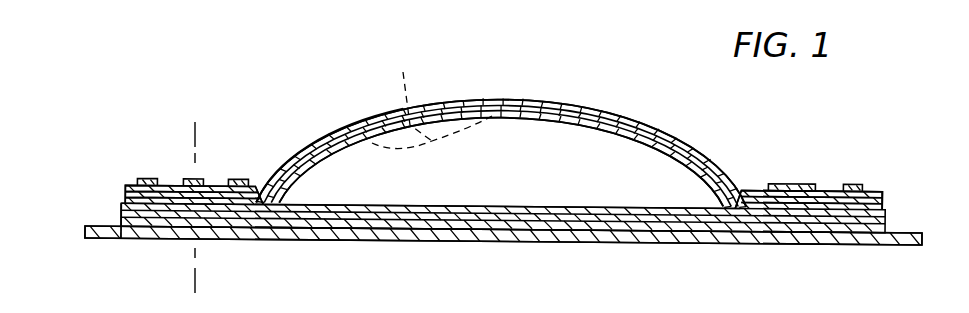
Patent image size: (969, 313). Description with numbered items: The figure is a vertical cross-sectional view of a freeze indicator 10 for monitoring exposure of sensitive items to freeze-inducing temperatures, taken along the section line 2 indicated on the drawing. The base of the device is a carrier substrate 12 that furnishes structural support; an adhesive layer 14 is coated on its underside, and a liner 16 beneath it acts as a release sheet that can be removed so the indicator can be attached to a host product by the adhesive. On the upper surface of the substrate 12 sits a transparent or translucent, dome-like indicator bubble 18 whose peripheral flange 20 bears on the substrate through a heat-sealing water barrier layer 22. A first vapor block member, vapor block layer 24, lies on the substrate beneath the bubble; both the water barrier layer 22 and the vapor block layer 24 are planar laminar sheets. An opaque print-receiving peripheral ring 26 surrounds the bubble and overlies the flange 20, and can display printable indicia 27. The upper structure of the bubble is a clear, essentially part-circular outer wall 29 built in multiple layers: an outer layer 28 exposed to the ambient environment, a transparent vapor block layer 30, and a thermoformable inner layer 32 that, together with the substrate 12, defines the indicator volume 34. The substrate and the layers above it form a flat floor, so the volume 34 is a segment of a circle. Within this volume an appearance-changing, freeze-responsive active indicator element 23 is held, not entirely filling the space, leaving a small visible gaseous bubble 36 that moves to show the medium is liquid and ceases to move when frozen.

The freeze indicator 10 is at (289, 41).
The carrier substrate 12 is at (120, 216).
The adhesive layer 14 is at (121, 236).
The liner 16 is at (118, 228).
The indicator bubble 18 is at (486, 64).
The peripheral flange 20 is at (232, 146).
The water barrier layer 22 is at (305, 206).
The active indicator element 23 is at (492, 166).
The vapor block layer 24 is at (122, 202).
The print-receiving peripheral ring 26 is at (163, 186).
The printable indicia 27 is at (152, 180).
The outer layer 28 is at (688, 150).
The outer wall 29 is at (334, 122).
The vapor block layer 30 is at (667, 147).
The inner layer 32 is at (587, 113).
The indicator volume 34 is at (596, 112).
The gaseous bubble 36 is at (432, 99).
The section line 2- 2 is at (186, 133).